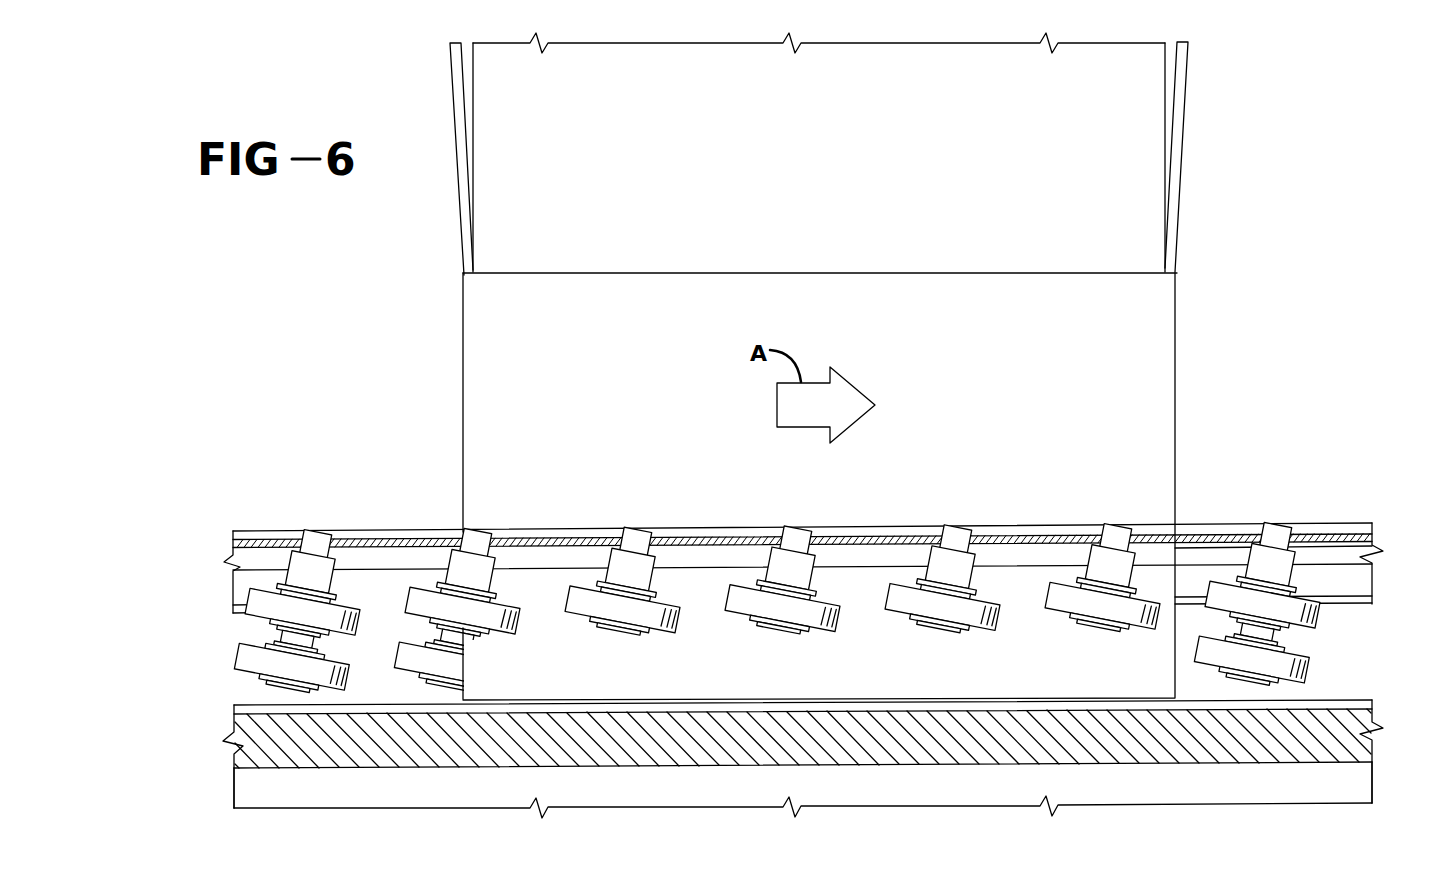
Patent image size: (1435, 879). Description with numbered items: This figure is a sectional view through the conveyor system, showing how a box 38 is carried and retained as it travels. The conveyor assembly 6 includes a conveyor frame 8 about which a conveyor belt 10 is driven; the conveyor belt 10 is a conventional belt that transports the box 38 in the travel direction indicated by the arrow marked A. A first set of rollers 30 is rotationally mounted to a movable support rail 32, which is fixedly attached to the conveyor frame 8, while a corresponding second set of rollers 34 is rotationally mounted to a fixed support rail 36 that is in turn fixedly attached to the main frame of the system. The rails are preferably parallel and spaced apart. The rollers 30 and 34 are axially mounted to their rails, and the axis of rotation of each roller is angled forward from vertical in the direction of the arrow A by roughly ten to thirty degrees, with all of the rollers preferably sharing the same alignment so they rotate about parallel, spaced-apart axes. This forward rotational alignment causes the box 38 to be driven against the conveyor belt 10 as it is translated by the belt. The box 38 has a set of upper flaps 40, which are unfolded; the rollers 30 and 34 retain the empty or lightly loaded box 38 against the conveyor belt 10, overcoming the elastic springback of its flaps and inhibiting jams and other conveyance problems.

The conveyor assembly 6 is at (293, 821).
The conveyor frame 8 is at (243, 791).
The conveyor belt 10 is at (515, 711).
The first set of rollers 30 is at (428, 600).
The movable support rail 32 is at (259, 528).
The second set of rollers 34 is at (425, 658).
The fixed support rail 36 is at (240, 591).
The box 38 is at (512, 376).
The upper flaps 40 is at (500, 88).